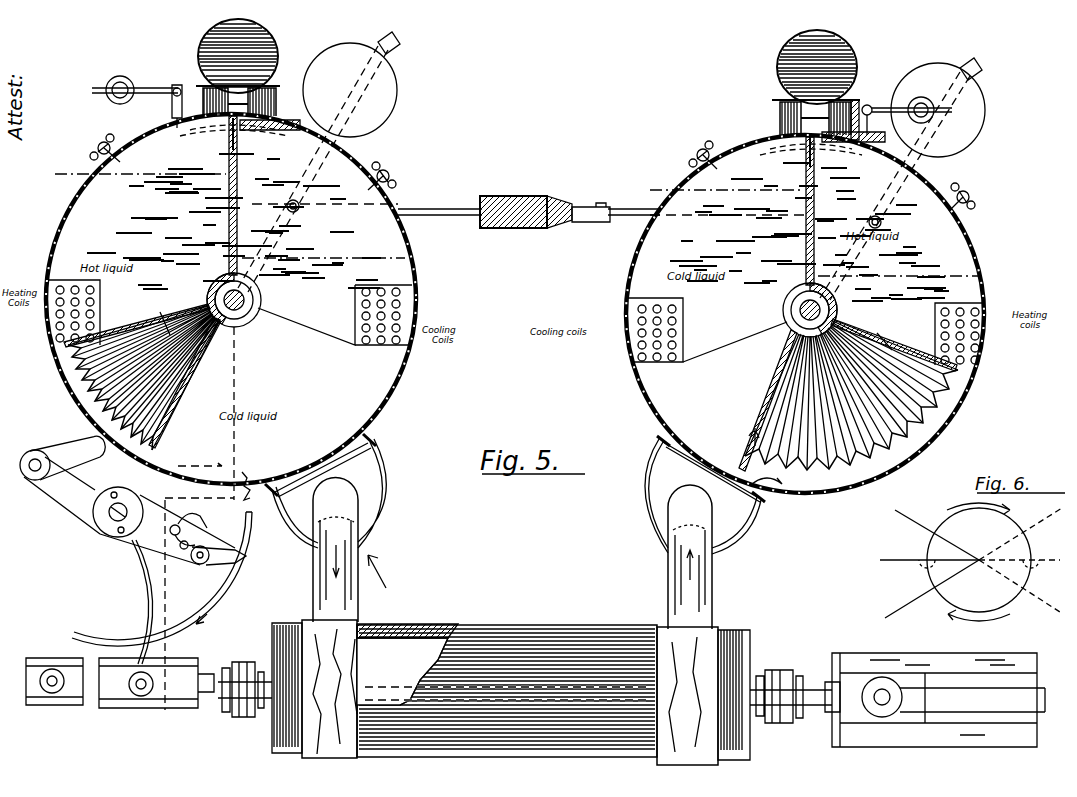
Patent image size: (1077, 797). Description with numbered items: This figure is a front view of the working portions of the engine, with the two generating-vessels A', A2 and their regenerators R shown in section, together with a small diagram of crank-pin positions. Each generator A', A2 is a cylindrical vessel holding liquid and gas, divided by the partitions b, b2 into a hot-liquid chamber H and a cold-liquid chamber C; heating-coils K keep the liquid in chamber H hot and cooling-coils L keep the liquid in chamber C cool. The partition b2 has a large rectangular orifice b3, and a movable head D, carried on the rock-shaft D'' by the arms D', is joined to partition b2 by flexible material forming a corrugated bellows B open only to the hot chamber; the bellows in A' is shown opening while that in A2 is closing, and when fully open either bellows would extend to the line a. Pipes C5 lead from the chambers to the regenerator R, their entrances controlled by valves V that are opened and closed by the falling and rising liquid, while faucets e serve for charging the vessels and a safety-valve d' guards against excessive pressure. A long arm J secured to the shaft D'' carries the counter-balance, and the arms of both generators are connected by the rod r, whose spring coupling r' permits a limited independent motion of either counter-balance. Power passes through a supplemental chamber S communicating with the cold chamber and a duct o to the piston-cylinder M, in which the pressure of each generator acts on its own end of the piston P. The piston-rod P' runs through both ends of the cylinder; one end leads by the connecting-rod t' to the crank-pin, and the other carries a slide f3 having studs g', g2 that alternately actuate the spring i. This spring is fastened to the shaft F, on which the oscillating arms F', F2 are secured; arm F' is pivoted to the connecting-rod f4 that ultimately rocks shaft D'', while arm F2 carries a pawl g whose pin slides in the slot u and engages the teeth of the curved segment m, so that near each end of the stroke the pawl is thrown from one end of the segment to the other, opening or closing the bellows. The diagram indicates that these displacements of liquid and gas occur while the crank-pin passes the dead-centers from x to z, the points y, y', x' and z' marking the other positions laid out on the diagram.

In FIG. 5, the generating-vessel A' is at (226, 299).
In FIG. 5, the generating-vessel A2 is at (823, 314).
In FIG. 5, the regenerator R is at (527, 61).
In FIG. 5, the pipe C5 is at (540, 111).
In FIG. 5, the safety-valve d' is at (137, 102).
In FIG. 5, the long arm J is at (610, 161).
In FIG. 5, the curved segment m is at (644, 100).
In FIG. 5, the valve or faucet e is at (531, 172).
In FIG. 5, the valve V is at (532, 149).
In FIG. 5, the rod r is at (529, 200).
In FIG. 5, the joint or coupling r' is at (545, 225).
In FIG. 5, the hot chamber H is at (923, 259).
In FIG. 5, the partition b is at (229, 234).
In FIG. 5, the heating-coil K is at (58, 311).
In FIG. 5, the cooling-coil L is at (398, 304).
In FIG. 5, the partition b2 is at (510, 337).
In FIG. 5, the opening or passage-way b3 is at (528, 330).
In FIG. 5, the rock-shaft D'' is at (522, 310).
In FIG. 5, the arm D' is at (500, 413).
In FIG. 5, the movable head or partition D is at (473, 394).
In FIG. 5, the line a is at (522, 324).
In FIG. 5, the cold chamber C is at (508, 382).
In FIG. 5, the bellows B is at (507, 387).
In FIG. 5, the oscillating cross-arm F' is at (28, 459).
In FIG. 5, the connecting-rod f4 is at (67, 458).
In FIG. 5, the shaft or pin F is at (138, 551).
In FIG. 5, the pawl g is at (201, 524).
In FIG. 5, the oscillating cross-arm F2 is at (217, 570).
In FIG. 5, the slot u is at (166, 575).
In FIG. 5, the spring i is at (196, 586).
In FIG. 5, the cross-head or slide f3 is at (130, 619).
In FIG. 5, the stud g2 is at (44, 710).
In FIG. 5, the stud g' is at (156, 701).
In FIG. 5, the supplemental chamber or extension S is at (515, 494).
In FIG. 5, the pipe, duct or port o is at (506, 553).
In FIG. 5, the crank-pin position / section line x is at (382, 580).
In FIG. 6, the crank-pin position / section line x is at (925, 594).
In FIG. 5, the piston P is at (299, 689).
In FIG. 5, the piston-rod P' is at (795, 696).
In FIG. 5, the piston-cylinder M is at (553, 694).
In FIG. 5, the connecting-rod t' is at (938, 700).
In FIG. 6, the crank-pin position z is at (931, 527).
In FIG. 6, the axis z' is at (1026, 594).
In FIG. 6, the axis y is at (922, 561).
In FIG. 6, the axis y' is at (1026, 563).
In FIG. 6, the axis x' is at (1027, 526).